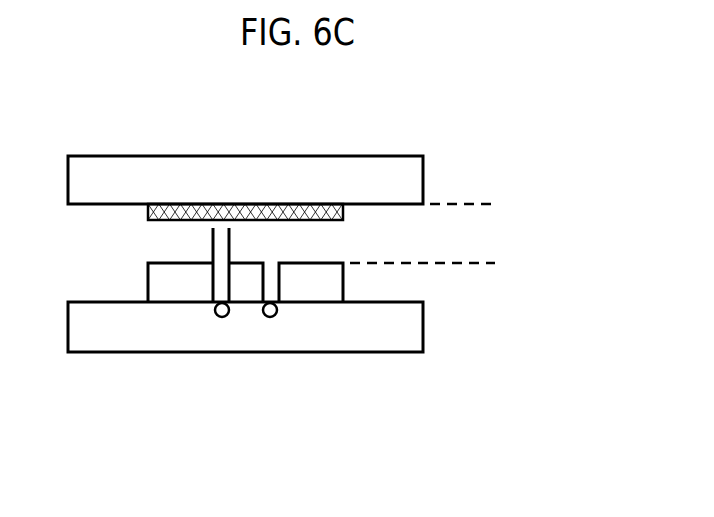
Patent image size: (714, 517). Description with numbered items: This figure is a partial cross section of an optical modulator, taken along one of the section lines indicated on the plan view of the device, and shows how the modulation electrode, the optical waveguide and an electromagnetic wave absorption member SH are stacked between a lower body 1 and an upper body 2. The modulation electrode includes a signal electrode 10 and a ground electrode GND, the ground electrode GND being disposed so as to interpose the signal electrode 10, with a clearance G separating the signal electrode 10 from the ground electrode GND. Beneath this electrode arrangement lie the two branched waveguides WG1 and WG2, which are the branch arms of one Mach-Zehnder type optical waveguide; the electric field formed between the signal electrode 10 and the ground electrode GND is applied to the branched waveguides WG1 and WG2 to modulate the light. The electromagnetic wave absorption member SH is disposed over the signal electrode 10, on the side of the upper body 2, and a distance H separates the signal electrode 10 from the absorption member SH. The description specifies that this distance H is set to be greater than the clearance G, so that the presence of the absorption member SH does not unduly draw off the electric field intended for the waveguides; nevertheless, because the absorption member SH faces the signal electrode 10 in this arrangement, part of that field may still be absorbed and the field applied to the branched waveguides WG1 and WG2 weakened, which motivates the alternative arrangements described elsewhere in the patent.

The first substrate 1 is at (407, 322).
The second substrate 2 is at (393, 173).
The signal electrode 10 is at (252, 277).
The electromagnetic wave absorption member SH is at (253, 212).
The ground electrode GND is at (175, 282).
The branched waveguide WG1 is at (211, 318).
The branched waveguide WG2 is at (273, 318).
The clearance G is at (242, 243).
The distance H is at (460, 207).